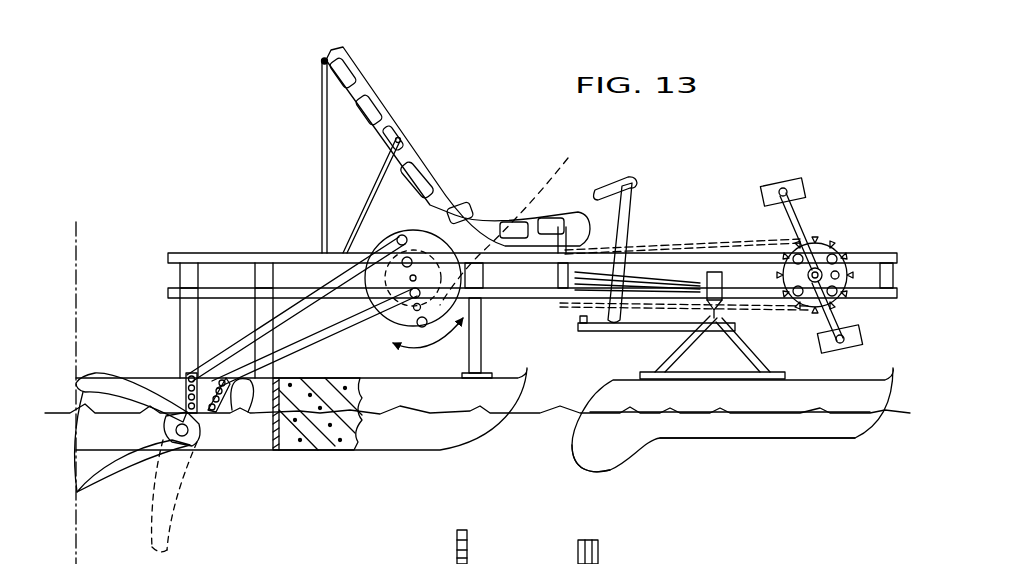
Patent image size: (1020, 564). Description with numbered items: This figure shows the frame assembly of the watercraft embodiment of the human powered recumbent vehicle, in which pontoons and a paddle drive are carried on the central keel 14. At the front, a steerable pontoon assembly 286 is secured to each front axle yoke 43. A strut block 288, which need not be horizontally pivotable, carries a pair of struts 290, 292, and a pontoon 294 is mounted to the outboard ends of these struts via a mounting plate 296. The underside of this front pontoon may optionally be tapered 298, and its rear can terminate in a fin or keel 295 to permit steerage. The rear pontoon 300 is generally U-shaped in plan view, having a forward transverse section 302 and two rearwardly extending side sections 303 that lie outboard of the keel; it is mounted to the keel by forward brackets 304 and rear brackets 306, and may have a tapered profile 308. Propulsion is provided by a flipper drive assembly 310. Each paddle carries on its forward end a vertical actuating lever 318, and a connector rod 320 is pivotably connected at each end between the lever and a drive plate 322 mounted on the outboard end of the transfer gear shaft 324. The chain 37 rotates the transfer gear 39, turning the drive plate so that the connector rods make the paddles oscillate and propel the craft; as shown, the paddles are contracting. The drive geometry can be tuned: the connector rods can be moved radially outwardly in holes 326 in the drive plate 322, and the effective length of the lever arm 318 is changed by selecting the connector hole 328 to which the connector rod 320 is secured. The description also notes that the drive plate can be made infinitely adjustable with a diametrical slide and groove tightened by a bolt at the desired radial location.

The central keel 14 is at (100, 261).
The chain 37 is at (762, 242).
The transfer gear 39 is at (509, 220).
The axle yoke 43 is at (712, 272).
The steerable pontoon assembly 286 is at (610, 366).
The strut block 288 is at (728, 308).
The strut 290 is at (666, 360).
The strut 292 is at (772, 360).
The pontoon 294 is at (850, 452).
The fin or keel 295 is at (620, 448).
The mounting plate 296 is at (695, 373).
The tapered underside 298 is at (763, 438).
The rear pontoon 300 is at (530, 399).
The forward transverse section 302 is at (285, 438).
The side section 303 is at (95, 425).
The forward bracket 304 is at (483, 345).
The rear bracket 306 is at (257, 315).
The tapered profile 308 is at (386, 437).
The flipper drive assembly 310 is at (375, 225).
The vertical actuating lever 318 is at (187, 378).
The connector rod 320 is at (313, 345).
The drive plate 322 is at (418, 240).
The transfer gear shaft 324 is at (413, 277).
The holes 326 is at (417, 307).
The connector hole 328 is at (240, 405).